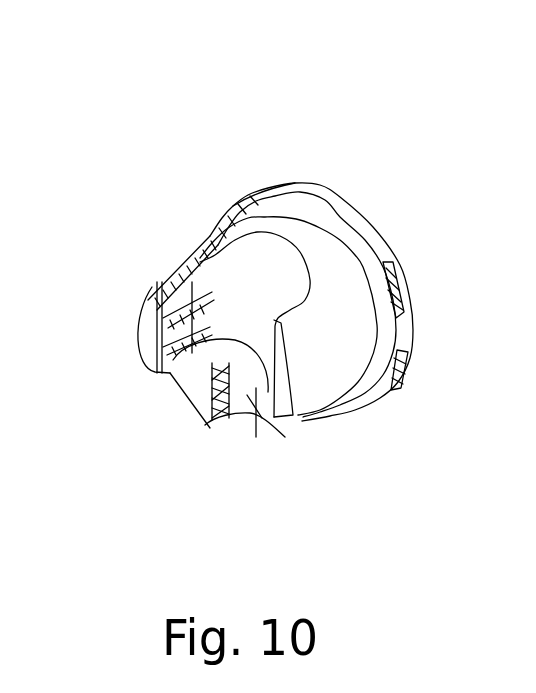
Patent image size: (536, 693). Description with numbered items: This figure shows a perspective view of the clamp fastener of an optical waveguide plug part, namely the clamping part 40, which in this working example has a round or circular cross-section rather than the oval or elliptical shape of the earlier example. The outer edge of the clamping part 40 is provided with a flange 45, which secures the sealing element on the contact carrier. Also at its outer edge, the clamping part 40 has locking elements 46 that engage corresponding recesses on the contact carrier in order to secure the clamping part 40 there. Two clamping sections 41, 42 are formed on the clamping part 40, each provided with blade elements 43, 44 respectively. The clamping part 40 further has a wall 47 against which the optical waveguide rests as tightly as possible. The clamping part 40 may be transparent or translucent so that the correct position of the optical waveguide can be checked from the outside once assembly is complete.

The clamping part 40 is at (288, 170).
The clamping section 41 is at (190, 283).
The clamping section 42 is at (257, 438).
The blade elements 43 is at (160, 284).
The blade elements 44 is at (205, 425).
The flange 45 is at (244, 212).
The locking elements 46 is at (406, 272).
The wall 47 is at (200, 375).